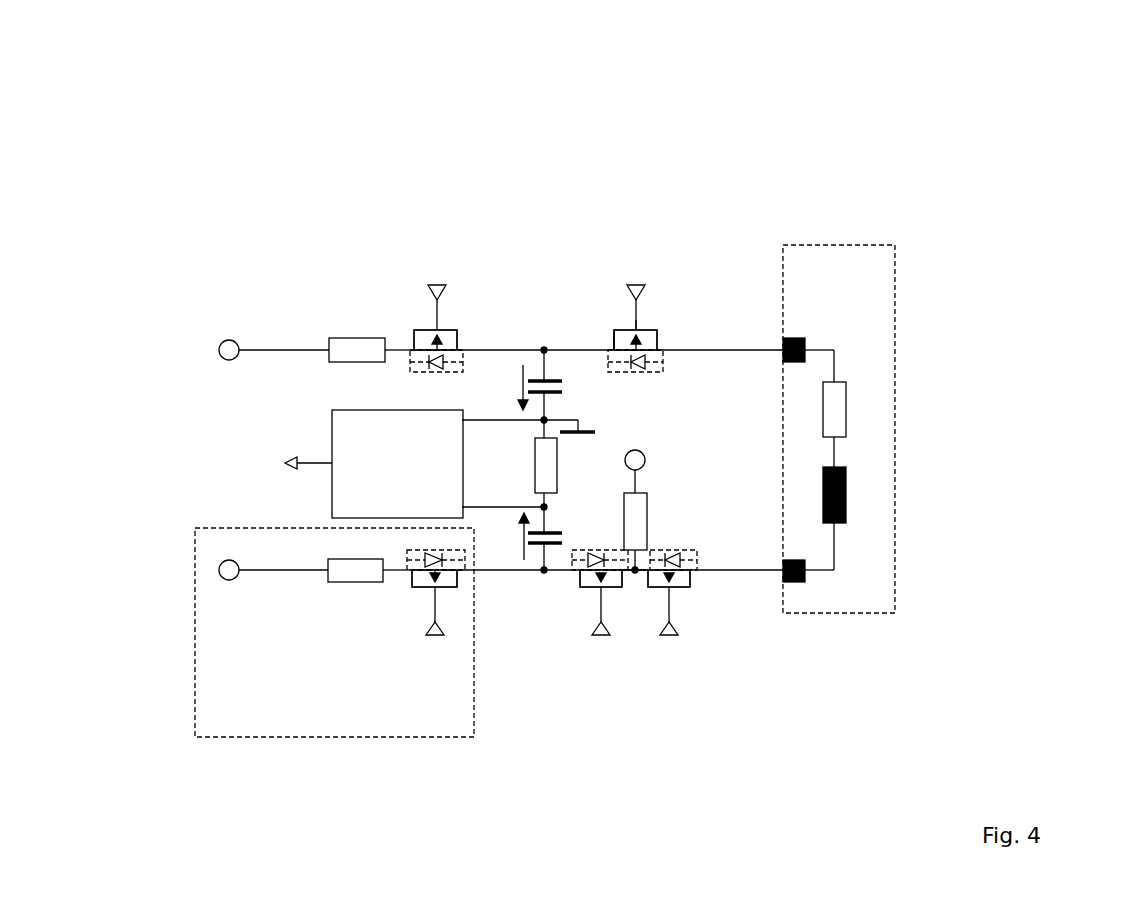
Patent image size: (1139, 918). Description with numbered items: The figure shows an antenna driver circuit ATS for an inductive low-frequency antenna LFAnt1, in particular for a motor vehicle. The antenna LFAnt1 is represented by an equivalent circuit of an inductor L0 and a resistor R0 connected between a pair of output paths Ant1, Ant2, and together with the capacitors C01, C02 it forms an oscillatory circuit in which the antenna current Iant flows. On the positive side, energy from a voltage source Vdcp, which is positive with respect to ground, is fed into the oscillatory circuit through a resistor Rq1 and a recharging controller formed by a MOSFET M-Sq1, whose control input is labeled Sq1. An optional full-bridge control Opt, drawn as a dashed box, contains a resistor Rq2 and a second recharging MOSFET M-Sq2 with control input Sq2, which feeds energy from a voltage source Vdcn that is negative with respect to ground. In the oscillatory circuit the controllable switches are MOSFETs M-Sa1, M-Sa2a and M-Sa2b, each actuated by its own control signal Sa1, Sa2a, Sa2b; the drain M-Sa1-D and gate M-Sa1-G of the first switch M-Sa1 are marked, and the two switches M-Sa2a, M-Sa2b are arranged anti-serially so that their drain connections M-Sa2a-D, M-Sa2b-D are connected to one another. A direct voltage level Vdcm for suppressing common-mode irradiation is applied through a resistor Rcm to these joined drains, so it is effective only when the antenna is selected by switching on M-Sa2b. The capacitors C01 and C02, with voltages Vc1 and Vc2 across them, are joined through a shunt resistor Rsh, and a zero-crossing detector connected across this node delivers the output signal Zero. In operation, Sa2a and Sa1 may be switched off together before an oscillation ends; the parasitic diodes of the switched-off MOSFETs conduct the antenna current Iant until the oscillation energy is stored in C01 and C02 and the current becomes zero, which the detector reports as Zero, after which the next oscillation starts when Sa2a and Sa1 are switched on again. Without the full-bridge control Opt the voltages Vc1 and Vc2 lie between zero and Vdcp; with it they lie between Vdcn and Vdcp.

The antenna driver circuit ATS is at (146, 115).
The antenna LFAnt1 is at (895, 263).
The output path Ant1 is at (810, 339).
The output path Ant2 is at (810, 586).
The resistor R0 is at (852, 409).
The inductor L0 is at (850, 495).
The voltage source Vdcp is at (264, 337).
The voltage source Vdcn is at (265, 556).
The direct voltage level Vdcm is at (634, 457).
The first quench resistor Rq1 is at (371, 365).
The second quench resistor Rq2 is at (370, 584).
The first quench switch Sq1 is at (436, 313).
The second quench switch Sq2 is at (436, 607).
The MOSFET M-Sq1 is at (457, 330).
The MOSFET M-Sq2 is at (420, 592).
The control signal Sa1 is at (635, 313).
The MOSFET M-Sa1 is at (657, 331).
The drain of transistor M-Sa1 M-Sa1-D is at (614, 331).
The gate of transistor M-Sa1 M-Sa1-G is at (639, 327).
The control signal Sa2a is at (601, 608).
The control signal Sa2b is at (672, 608).
The controllable switch M-Sa2a is at (580, 587).
The controllable switch M-Sa2b is at (651, 573).
The drain connection M-Sa2a-D is at (634, 573).
The drain connection M-Sa2b-D is at (623, 572).
The antenna current Iant is at (741, 340).
The capacitor C01 is at (568, 385).
The capacitor C02 is at (562, 537).
The voltage at the capacitor C01 Vc1 is at (501, 387).
The voltage at the capacitor C02 Vc2 is at (502, 536).
The shunt resistor Rsh is at (568, 463).
The common mode resistor Rcm is at (664, 531).
The signal zero Zero is at (345, 464).
The full-bridge control Opt is at (334, 632).